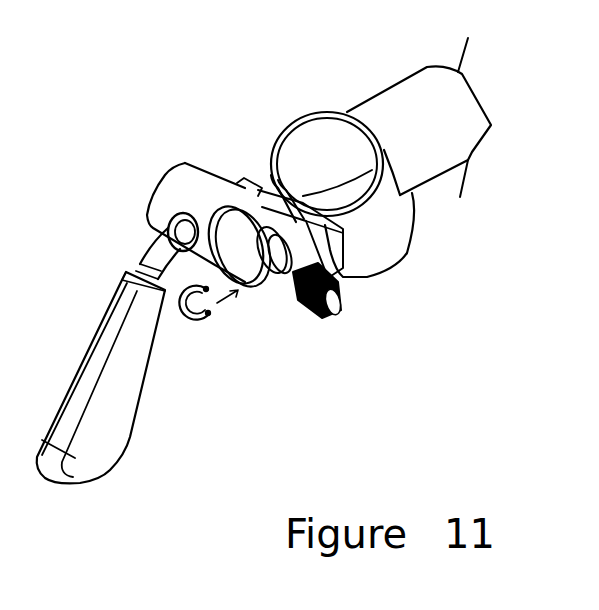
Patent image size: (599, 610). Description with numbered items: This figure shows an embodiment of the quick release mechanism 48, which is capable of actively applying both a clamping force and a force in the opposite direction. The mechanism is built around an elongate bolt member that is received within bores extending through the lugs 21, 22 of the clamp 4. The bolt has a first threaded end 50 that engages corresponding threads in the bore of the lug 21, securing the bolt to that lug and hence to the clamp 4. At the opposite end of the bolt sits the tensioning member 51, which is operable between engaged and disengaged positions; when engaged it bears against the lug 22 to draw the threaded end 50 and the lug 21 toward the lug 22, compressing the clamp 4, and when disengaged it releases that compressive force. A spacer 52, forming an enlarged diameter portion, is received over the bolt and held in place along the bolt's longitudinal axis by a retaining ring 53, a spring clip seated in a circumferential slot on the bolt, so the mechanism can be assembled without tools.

The clamp 4 is at (403, 252).
The lug 22 is at (265, 187).
The quick release mechanism 48 is at (178, 170).
The tensioning member 51 is at (102, 477).
The spacer 52 is at (264, 288).
The lug 21 is at (279, 292).
The first threaded end 50 is at (311, 305).
The retaining ring 53 is at (183, 325).